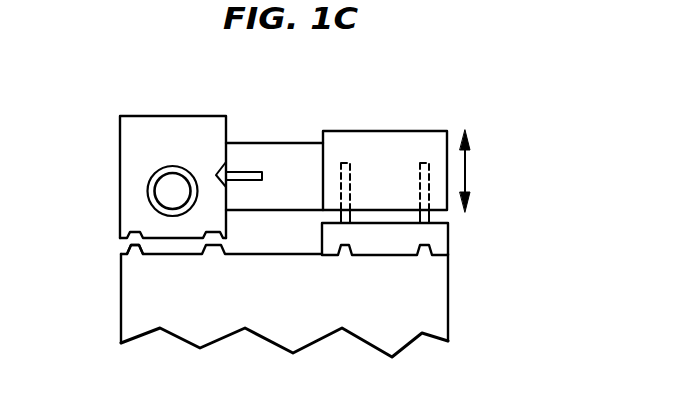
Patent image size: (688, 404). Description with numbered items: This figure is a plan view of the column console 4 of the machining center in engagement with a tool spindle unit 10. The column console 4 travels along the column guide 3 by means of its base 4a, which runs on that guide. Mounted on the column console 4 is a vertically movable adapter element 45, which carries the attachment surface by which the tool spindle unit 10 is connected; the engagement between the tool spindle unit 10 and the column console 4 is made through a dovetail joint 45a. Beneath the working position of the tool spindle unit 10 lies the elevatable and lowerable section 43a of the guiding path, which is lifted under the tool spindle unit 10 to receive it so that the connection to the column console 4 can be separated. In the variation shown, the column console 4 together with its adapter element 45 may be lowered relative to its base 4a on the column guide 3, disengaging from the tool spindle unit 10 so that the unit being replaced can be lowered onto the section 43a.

The column guide 3 is at (427, 255).
The column console 4 is at (444, 131).
The base 4a is at (448, 237).
The tool spindle unit 10 is at (127, 167).
The elevatable and lowerable section 43a is at (127, 250).
The adapter element 45 is at (290, 143).
The dovetail joint 45a is at (217, 170).